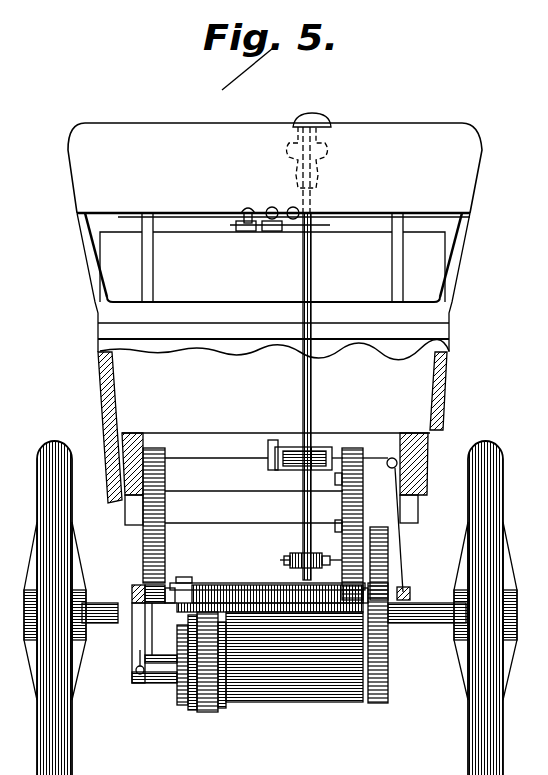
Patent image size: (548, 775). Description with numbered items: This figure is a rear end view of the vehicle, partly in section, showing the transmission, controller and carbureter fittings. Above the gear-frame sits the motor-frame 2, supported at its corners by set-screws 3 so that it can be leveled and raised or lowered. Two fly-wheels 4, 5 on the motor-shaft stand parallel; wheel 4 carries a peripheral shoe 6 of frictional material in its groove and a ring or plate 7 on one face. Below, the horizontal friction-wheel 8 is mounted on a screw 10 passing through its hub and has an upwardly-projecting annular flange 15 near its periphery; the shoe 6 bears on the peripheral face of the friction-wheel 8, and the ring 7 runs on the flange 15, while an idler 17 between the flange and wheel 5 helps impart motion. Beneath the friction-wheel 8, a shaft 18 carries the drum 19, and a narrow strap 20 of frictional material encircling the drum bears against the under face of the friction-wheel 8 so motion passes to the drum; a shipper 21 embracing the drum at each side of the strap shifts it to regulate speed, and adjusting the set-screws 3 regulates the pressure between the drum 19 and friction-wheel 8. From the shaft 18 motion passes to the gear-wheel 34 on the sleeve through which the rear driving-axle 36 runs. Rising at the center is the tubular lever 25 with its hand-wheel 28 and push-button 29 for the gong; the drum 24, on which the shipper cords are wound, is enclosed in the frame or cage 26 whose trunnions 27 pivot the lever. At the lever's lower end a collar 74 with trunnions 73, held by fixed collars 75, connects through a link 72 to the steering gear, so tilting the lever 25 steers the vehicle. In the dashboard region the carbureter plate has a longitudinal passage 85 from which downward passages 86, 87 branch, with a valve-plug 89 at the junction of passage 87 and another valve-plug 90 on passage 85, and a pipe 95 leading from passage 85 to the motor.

The motor-frame 2 is at (186, 585).
The set-screws 3 is at (270, 608).
The wheel 4 is at (366, 482).
The wheel 5 is at (165, 540).
The peripheral shoe 6 is at (366, 515).
The ring or plate 7 is at (336, 518).
The friction-wheel 8 is at (272, 612).
The screw 10 is at (186, 582).
The annular flange 15 is at (215, 582).
The idler 17 is at (168, 603).
The shaft 18 is at (168, 655).
The drum 19 is at (294, 669).
The strap 20 is at (206, 712).
The shipper 21 is at (187, 712).
The drum 24 is at (326, 452).
The tubular lever 25 is at (312, 383).
The frame or cage 26 is at (301, 471).
The trunnions 27 is at (272, 458).
The hand-wheel 28 is at (337, 150).
The push-button 29 is at (326, 110).
The gear-wheel 34 is at (390, 558).
The rear driving-axle 36 is at (274, 621).
The link 72 is at (288, 556).
The trunnions 73 is at (290, 563).
The collar 74 is at (326, 555).
The fixed collars 75 is at (300, 554).
The longitudinal passage 85 is at (252, 205).
The passage 86 is at (244, 231).
The passage 87 is at (272, 231).
The valve-plug 89 is at (275, 209).
The valve-plug 90 is at (320, 230).
The pipe 95 is at (325, 210).